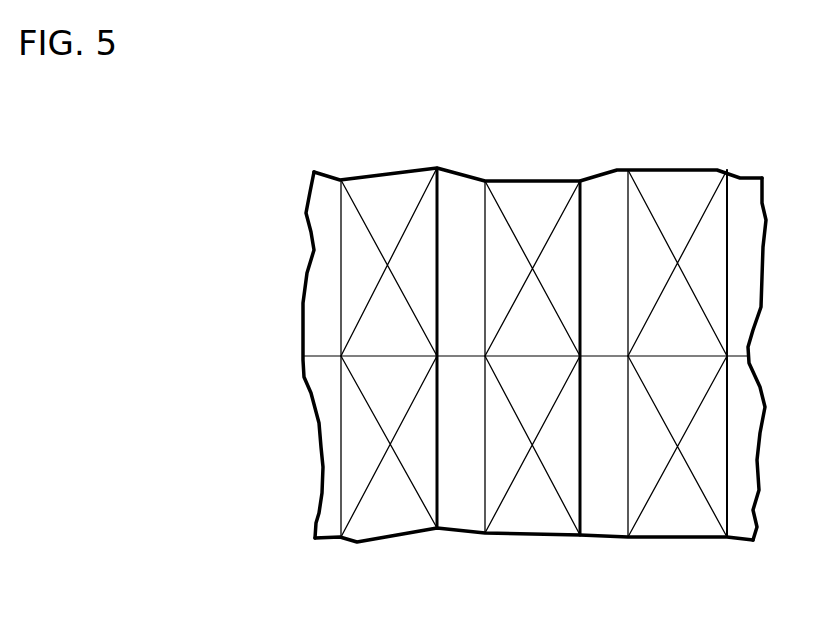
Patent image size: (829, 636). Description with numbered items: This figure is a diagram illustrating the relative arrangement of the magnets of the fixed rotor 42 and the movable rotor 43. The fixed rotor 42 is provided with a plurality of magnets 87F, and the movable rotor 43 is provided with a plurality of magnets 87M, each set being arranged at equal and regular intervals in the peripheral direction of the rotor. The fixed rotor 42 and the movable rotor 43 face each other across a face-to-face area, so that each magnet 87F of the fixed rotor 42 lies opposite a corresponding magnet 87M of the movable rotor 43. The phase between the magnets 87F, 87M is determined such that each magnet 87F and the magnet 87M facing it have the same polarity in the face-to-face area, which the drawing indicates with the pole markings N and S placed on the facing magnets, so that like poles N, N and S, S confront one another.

The fixed rotor 42 is at (605, 188).
The movable rotor 43 is at (610, 522).
The magnets of the fixed rotor 87F is at (390, 192).
The magnets of the movable rotor 87M is at (393, 518).
The N magnetic pole N is at (368, 347).
The S magnetic pole S is at (510, 349).